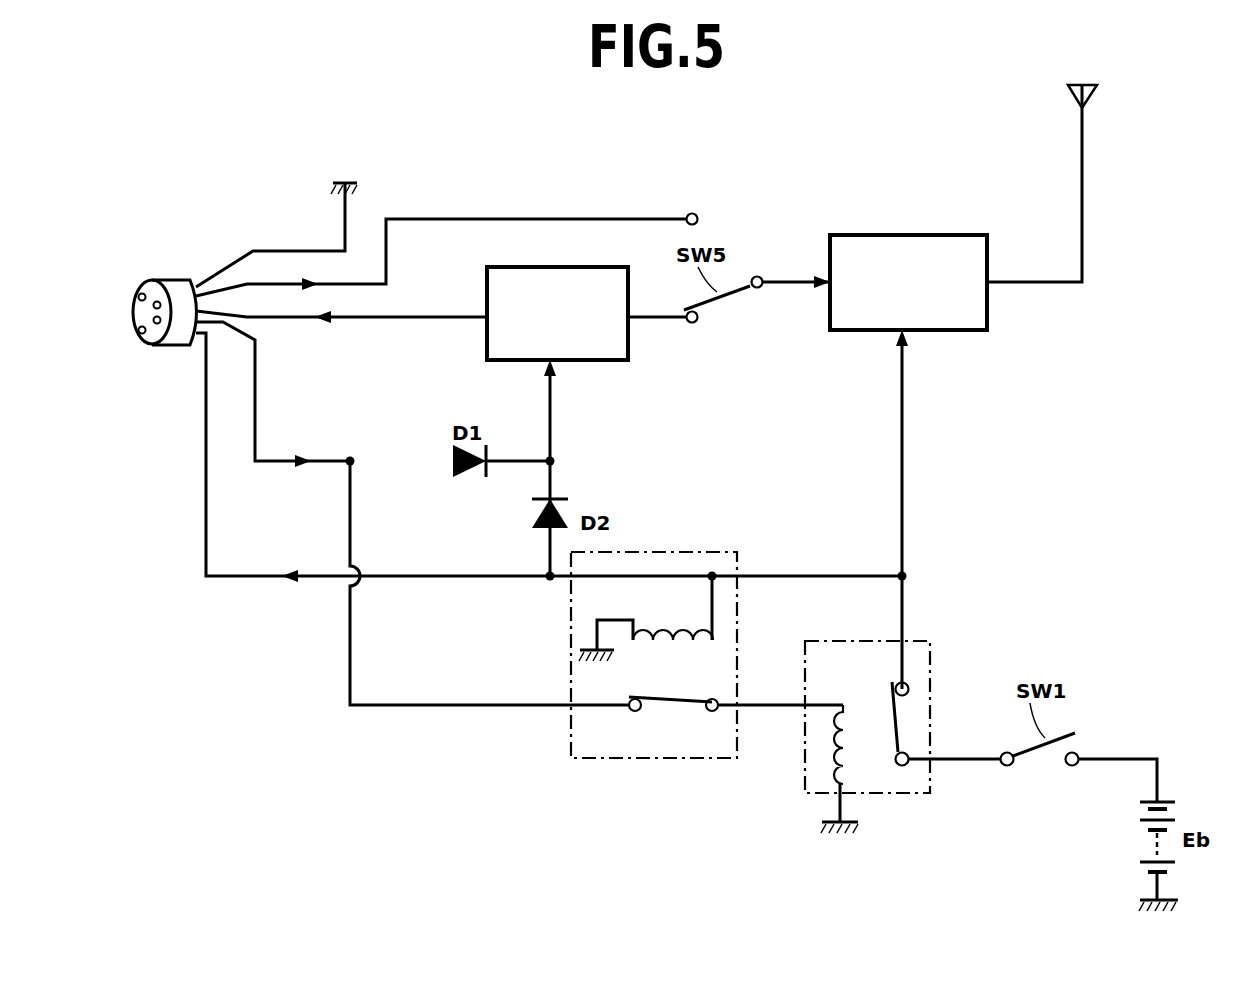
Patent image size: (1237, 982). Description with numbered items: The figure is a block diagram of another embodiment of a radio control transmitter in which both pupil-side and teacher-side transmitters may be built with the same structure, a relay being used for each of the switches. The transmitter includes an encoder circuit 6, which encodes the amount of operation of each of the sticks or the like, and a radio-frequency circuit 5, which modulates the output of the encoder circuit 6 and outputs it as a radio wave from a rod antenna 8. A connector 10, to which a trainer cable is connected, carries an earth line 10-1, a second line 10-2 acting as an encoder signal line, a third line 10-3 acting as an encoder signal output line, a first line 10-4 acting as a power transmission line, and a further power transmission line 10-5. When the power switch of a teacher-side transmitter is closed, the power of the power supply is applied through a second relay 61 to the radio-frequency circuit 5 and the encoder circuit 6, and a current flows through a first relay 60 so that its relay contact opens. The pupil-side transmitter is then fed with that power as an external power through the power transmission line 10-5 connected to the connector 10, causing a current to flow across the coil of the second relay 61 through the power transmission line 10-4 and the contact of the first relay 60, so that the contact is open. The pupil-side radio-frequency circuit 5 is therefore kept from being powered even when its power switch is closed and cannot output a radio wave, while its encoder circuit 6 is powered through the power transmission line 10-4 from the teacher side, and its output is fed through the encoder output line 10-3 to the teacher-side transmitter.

The radio-frequency circuit 5 is at (908, 235).
The encoder circuit 6 is at (625, 345).
The rod antenna 8 is at (1097, 87).
The connector 10 is at (140, 345).
The earth line 10-1 is at (282, 252).
The second line 10-2 is at (467, 219).
The third line 10-3 is at (393, 316).
The first line 10-4 is at (257, 373).
The power transmission line 10-5 is at (237, 576).
The first relay 60 is at (652, 758).
The second relay 61 is at (882, 795).